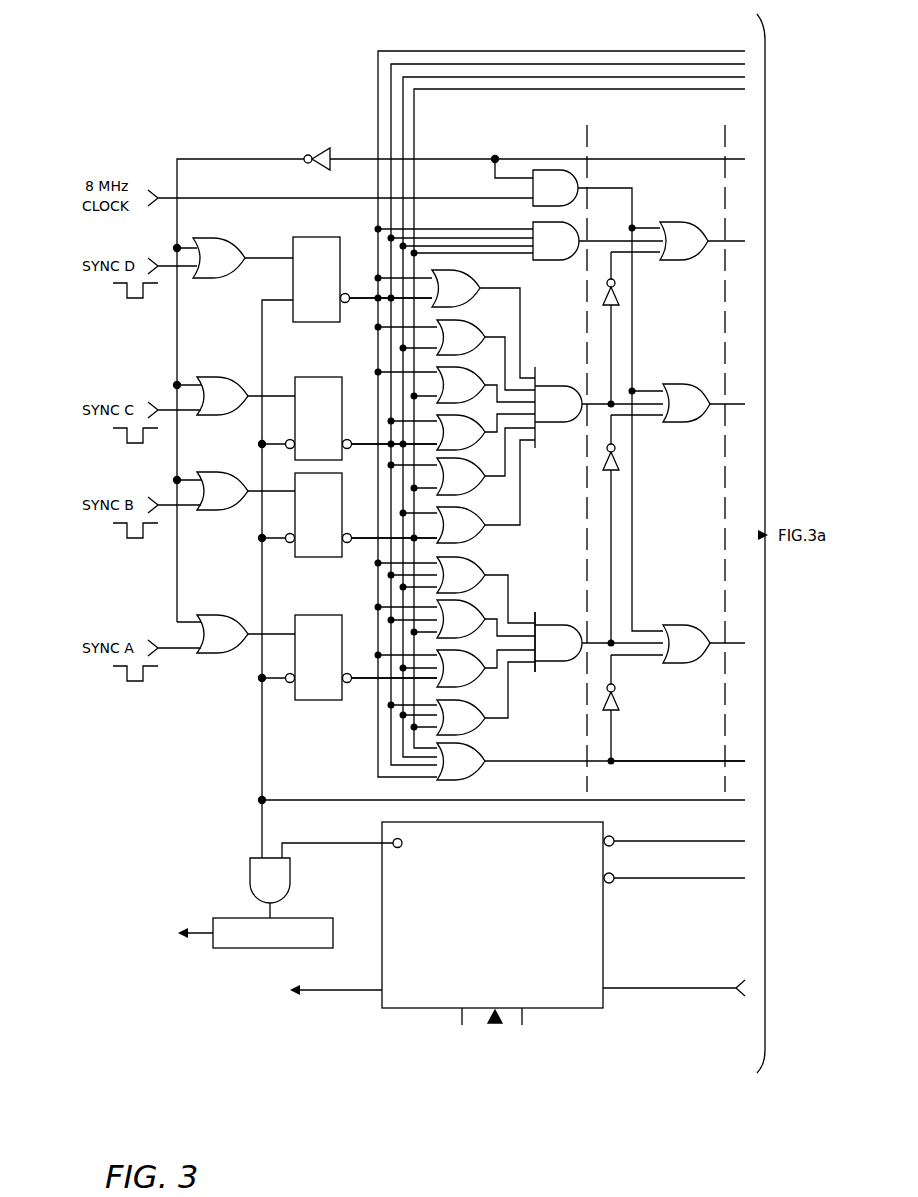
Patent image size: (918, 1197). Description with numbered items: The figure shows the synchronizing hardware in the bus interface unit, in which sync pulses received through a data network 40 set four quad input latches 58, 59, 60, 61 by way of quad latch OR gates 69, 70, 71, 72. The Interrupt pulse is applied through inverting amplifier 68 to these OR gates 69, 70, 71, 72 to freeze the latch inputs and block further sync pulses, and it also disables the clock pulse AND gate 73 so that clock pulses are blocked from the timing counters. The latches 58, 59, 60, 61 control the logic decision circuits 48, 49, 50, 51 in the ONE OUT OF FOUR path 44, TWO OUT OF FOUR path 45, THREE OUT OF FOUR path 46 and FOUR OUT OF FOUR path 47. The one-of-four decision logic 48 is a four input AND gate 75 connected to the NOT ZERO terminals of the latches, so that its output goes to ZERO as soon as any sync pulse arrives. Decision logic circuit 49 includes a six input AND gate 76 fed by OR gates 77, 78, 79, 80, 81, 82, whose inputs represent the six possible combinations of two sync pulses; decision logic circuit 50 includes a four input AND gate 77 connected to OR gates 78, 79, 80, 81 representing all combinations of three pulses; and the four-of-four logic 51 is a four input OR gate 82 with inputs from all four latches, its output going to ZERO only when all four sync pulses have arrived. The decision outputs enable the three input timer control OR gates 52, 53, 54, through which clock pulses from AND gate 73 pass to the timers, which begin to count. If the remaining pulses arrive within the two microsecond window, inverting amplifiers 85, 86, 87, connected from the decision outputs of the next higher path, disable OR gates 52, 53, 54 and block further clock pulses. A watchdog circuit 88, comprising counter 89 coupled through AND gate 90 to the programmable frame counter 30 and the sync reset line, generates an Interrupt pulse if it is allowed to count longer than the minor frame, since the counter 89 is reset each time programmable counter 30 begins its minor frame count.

The programmable frame counter 30 is at (600, 1014).
The data network 40 is at (598, 37).
The ONE OUT OF FOUR path 44 is at (650, 214).
The TWO OUT OF FOUR path 45 is at (650, 380).
The THREE OUT OF FOUR path 46 is at (648, 600).
The FOUR OUT OF FOUR path 47 is at (640, 748).
The ONE OUT OF FOUR sync decision logic 48 is at (519, 224).
The decision logic circuit 49 is at (566, 341).
The decision logic circuit 50 is at (566, 594).
The logic decision circuit 51 is at (516, 756).
The timer control OR gate 52 is at (679, 228).
The timer control OR gate 53 is at (680, 383).
The timer control OR gate 54 is at (680, 628).
The quad input latch 58 is at (320, 237).
The quad input latch 59 is at (318, 377).
The quad input latch 60 is at (321, 558).
The quad input latch 61 is at (322, 701).
The inverting amplifier 68 is at (324, 148).
The quad latch OR gate 69 is at (224, 252).
The quad latch OR gate 70 is at (217, 384).
The quad latch OR gate 71 is at (215, 480).
The quad latch OR gate 72 is at (215, 622).
The clock pulse AND gate 73 is at (548, 177).
The four input AND gate 75 is at (553, 257).
The six input AND gate 76 is at (550, 386).
The OR gate / four input AND gate 77 is at (470, 285).
The OR gate 78 is at (472, 334).
The OR gate 79 is at (466, 375).
The OR gate 80 is at (466, 436).
The OR gate 81 is at (472, 492).
The OR gate 82 is at (478, 537).
The inverting amplifier 85 is at (622, 292).
The inverting amplifier 86 is at (622, 458).
The inverting amplifier 87 is at (622, 703).
The watchdog circuit 88 is at (216, 907).
The counter 89 is at (309, 945).
The AND gate 90 is at (285, 885).